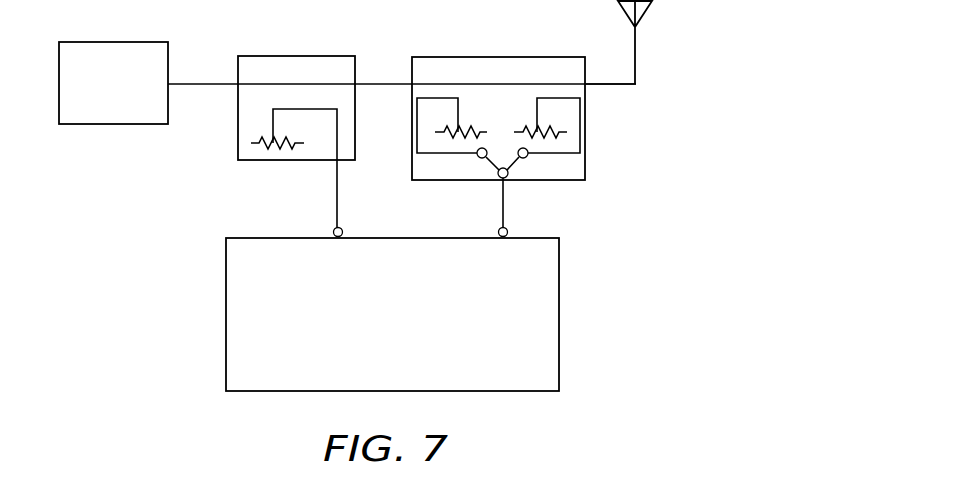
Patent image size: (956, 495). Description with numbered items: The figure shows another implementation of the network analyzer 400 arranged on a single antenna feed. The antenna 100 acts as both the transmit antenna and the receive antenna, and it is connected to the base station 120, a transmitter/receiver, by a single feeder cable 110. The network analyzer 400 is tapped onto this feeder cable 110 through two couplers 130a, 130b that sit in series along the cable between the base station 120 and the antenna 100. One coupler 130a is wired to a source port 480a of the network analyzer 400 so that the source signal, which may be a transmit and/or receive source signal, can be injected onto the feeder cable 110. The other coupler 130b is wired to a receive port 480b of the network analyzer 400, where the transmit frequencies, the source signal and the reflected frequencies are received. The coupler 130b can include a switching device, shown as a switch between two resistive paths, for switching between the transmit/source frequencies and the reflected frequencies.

The antenna 100 is at (648, 14).
The feeder cable 110 is at (623, 86).
The base station 120 is at (122, 41).
The coupler 130a is at (300, 55).
The coupler 130b is at (495, 55).
The network analyzer 400 is at (560, 317).
The source port 480a is at (335, 229).
The receive port 480b is at (507, 229).